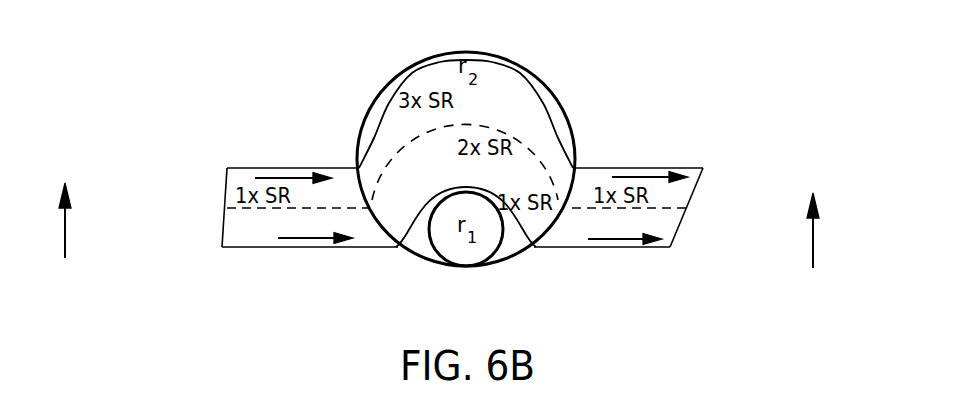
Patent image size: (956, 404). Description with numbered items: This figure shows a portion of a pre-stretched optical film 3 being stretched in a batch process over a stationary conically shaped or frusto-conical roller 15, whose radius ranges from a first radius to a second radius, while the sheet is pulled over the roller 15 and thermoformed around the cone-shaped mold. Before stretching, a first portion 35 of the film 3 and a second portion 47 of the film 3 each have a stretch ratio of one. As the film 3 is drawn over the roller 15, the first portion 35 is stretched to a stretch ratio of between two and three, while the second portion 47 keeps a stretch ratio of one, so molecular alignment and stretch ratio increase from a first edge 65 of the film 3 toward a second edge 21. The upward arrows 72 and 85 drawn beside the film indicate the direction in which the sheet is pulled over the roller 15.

The optical film 3 is at (253, 240).
The conically shaped roller 15 is at (455, 247).
The second edge 21 is at (285, 168).
The first portion 35 is at (230, 181).
The second portion 47 is at (232, 235).
The first edge 65 is at (295, 247).
The inlet direction arrow 72 is at (66, 235).
The outlet direction arrow 85 is at (813, 245).